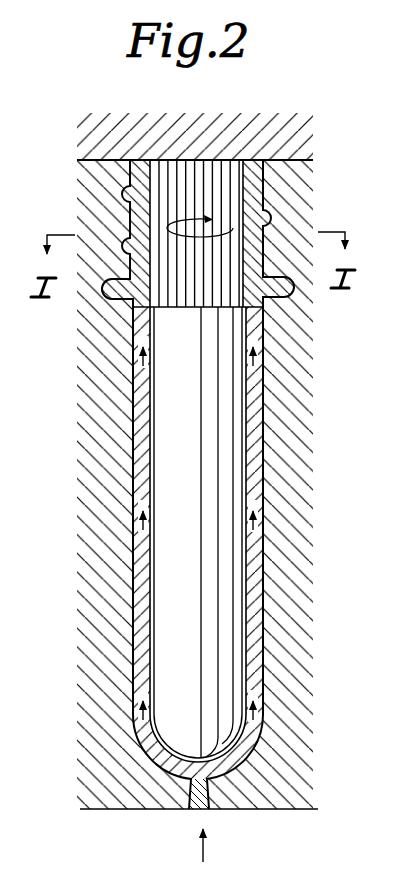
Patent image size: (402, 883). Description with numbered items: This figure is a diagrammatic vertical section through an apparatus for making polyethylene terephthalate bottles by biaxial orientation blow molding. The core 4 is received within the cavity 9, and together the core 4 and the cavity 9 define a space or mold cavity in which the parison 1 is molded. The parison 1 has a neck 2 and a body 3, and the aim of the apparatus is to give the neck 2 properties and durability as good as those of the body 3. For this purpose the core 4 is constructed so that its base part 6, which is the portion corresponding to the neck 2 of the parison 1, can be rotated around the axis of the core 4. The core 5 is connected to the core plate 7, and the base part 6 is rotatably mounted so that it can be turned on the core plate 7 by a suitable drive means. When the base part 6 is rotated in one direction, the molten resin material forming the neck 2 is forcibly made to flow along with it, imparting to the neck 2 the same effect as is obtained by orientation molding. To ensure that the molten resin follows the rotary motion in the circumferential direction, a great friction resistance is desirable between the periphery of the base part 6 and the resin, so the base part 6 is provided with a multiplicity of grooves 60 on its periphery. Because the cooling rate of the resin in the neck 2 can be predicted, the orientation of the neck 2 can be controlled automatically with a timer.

The parison 1 is at (128, 579).
The neck 2 is at (250, 193).
The body 3 is at (257, 638).
The core 4 is at (224, 458).
The core 5 is at (228, 390).
The base part 6 is at (228, 287).
The core plate 7 is at (293, 133).
The cavity 9 is at (293, 555).
The grooves 60 is at (135, 317).